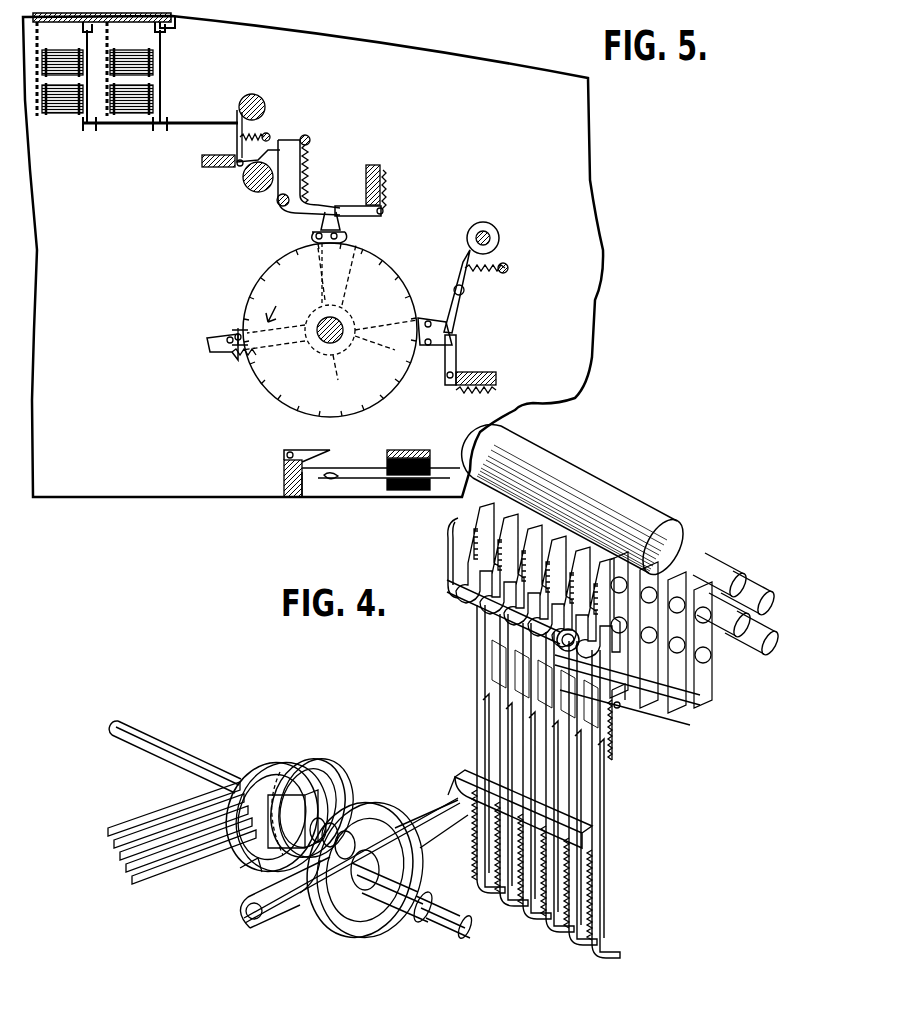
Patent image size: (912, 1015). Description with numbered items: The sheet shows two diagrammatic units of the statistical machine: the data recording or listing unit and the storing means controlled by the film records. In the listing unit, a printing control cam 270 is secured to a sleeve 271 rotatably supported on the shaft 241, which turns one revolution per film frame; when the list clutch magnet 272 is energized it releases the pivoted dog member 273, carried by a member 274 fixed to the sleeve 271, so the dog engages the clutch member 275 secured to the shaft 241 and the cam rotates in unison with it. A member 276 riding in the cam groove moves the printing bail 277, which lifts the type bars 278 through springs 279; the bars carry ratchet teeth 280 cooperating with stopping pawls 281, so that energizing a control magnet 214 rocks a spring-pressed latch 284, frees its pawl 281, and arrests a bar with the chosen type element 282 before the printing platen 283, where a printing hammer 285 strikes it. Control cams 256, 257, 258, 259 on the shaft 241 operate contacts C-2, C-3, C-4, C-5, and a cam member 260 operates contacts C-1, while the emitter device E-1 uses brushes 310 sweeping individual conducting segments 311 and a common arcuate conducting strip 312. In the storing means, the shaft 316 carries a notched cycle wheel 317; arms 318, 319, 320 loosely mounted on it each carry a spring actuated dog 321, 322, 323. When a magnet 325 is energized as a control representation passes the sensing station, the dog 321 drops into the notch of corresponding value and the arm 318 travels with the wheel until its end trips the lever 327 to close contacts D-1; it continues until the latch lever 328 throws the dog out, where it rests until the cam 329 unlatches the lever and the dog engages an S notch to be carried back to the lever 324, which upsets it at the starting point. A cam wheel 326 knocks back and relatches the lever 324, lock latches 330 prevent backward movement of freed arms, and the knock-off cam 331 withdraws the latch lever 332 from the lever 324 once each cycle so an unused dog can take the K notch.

In FIG. 5, the magnets 325 is at (137, 62).
In FIG. 5, the knock-off cam 331 is at (255, 96).
In FIG. 5, the latch lever 332 is at (237, 142).
In FIG. 5, the cam wheel 326 is at (248, 186).
In FIG. 5, the lever 324 is at (287, 160).
In FIG. 5, the spring actuated dog 321 is at (320, 226).
In FIG. 5, the lock latches 330 is at (358, 211).
In FIG. 5, the cycle wheel 317 is at (250, 275).
In FIG. 5, the arm 318 is at (288, 307).
In FIG. 5, the arm 319 is at (237, 330).
In FIG. 5, the spring actuated dog 322 is at (240, 362).
In FIG. 5, the shaft 316 is at (330, 343).
In FIG. 5, the arm 320 is at (378, 345).
In FIG. 5, the spring actuated dog 323 is at (423, 318).
In FIG. 5, the latch lever 328 is at (463, 300).
In FIG. 5, the cam 329 is at (472, 228).
In FIG. 5, the lever 327 is at (345, 442).
In FIG. 5, the contacts D-1 is at (334, 474).
In FIG. 4, the printing platen 283 is at (552, 455).
In FIG. 4, the type elements 282 is at (478, 531).
In FIG. 4, the printing hammer 285 is at (448, 560).
In FIG. 4, the type bars 278 is at (485, 707).
In FIG. 4, the control magnets 214 is at (732, 645).
In FIG. 4, the spring-pressed pivoted latch 284 is at (655, 680).
In FIG. 4, the stopping pawls 281 is at (625, 705).
In FIG. 4, the ratchet teeth 280 is at (620, 752).
In FIG. 4, the printing bail 277 is at (545, 822).
In FIG. 4, the springs 279 is at (470, 812).
In FIG. 4, the member 276 is at (448, 790).
In FIG. 4, the printing control cam 270 is at (440, 805).
In FIG. 4, the common arcuate conducting strip 312 is at (240, 912).
In FIG. 4, the shaft 241 is at (152, 742).
In FIG. 4, the contacts C-5 is at (178, 792).
In FIG. 4, the contacts C-4 is at (198, 805).
In FIG. 4, the contacts C-3 is at (178, 810).
In FIG. 4, the contacts C-2 is at (205, 848).
In FIG. 4, the contacts C-1 is at (204, 838).
In FIG. 4, the control cam 259 is at (250, 780).
In FIG. 4, the control cam 258 is at (258, 775).
In FIG. 4, the control cam 257 is at (272, 775).
In FIG. 4, the control cam 256 is at (280, 772).
In FIG. 4, the brushes 310 is at (245, 868).
In FIG. 4, the emitter device E-1 is at (318, 770).
In FIG. 4, the cam member 260 is at (300, 780).
In FIG. 4, the conducting segments 311 is at (335, 790).
In FIG. 4, the clutch member 275 is at (338, 792).
In FIG. 4, the member 274 is at (360, 822).
In FIG. 4, the pivoted dog member 273 is at (300, 893).
In FIG. 4, the list clutch magnet 272 is at (312, 926).
In FIG. 4, the sleeve 271 is at (408, 908).